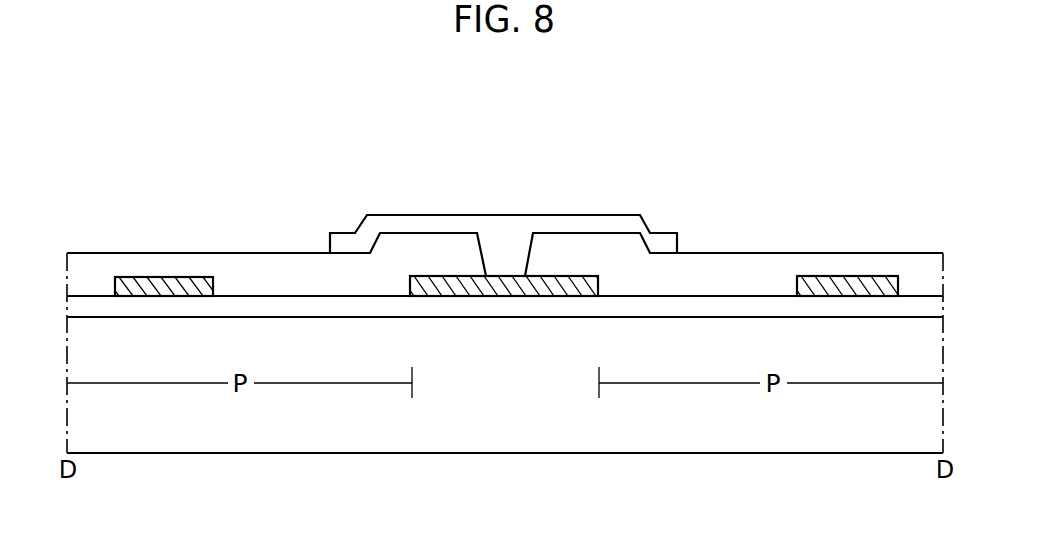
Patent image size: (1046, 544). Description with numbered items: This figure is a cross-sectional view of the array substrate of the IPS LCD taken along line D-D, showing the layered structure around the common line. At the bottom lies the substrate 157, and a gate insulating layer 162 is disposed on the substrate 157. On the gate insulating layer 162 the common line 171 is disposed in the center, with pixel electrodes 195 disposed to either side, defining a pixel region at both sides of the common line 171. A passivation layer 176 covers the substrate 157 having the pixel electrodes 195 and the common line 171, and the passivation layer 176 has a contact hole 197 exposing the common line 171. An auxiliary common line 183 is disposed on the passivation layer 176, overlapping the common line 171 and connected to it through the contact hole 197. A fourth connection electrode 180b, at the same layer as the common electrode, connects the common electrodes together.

The substrate 157 is at (912, 423).
The gate insulating layer 162 is at (272, 310).
The common line 171 is at (500, 285).
The passivation layer 176 is at (738, 268).
The fourth connection electrode 180b is at (362, 235).
The auxiliary common line 183 is at (545, 222).
The pixel electrode 195 is at (160, 285).
The contact hole 197 is at (498, 225).